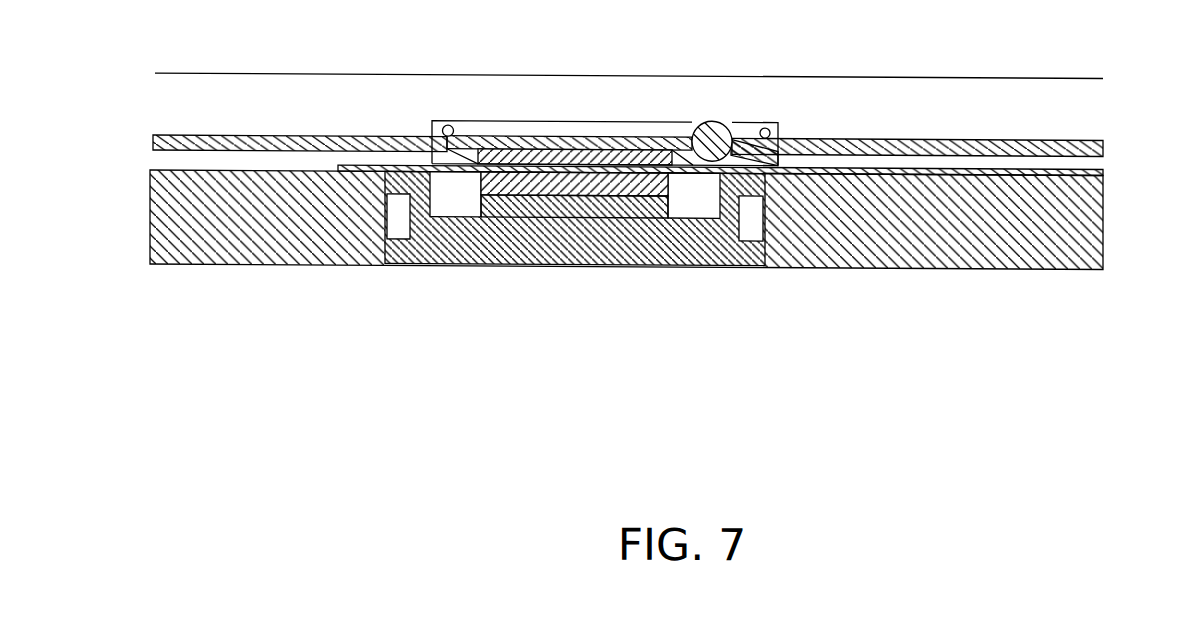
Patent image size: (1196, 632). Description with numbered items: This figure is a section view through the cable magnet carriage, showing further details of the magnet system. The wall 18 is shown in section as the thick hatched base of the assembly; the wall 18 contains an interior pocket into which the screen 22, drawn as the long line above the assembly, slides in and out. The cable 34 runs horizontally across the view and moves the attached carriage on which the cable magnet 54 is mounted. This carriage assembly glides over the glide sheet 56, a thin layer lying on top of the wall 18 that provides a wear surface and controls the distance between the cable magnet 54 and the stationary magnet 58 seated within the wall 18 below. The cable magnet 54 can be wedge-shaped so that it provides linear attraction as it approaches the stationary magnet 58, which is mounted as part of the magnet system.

The screen 22 is at (1013, 72).
The cable 34 is at (1083, 135).
The cable magnet 54 is at (563, 161).
The glide sheet 56 is at (1063, 172).
The wall 18 is at (867, 232).
The stationary magnet 58 is at (528, 183).